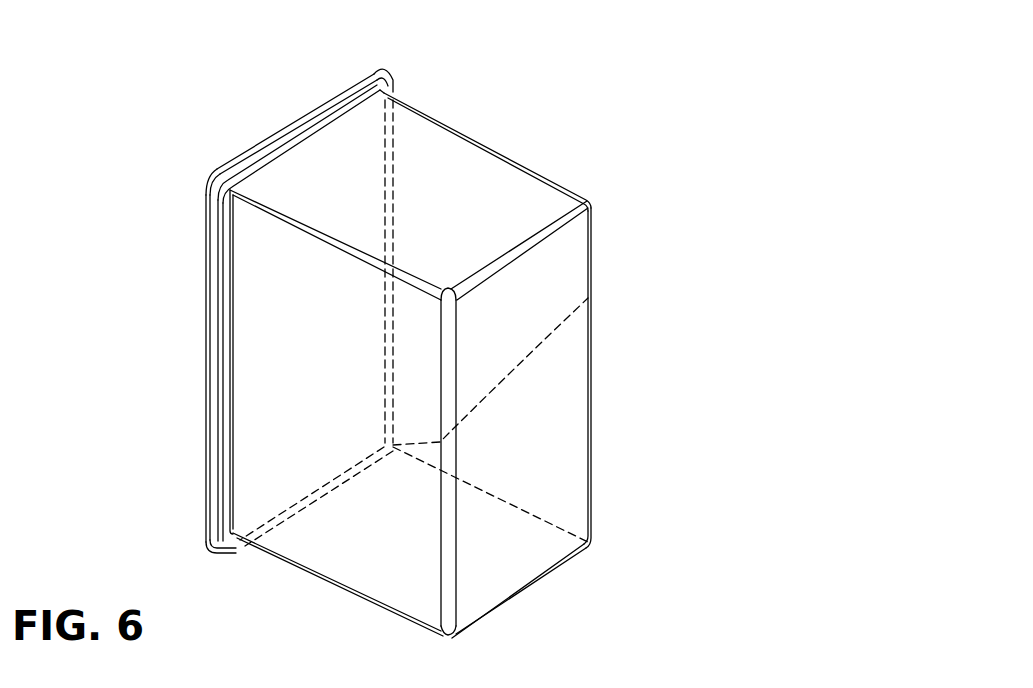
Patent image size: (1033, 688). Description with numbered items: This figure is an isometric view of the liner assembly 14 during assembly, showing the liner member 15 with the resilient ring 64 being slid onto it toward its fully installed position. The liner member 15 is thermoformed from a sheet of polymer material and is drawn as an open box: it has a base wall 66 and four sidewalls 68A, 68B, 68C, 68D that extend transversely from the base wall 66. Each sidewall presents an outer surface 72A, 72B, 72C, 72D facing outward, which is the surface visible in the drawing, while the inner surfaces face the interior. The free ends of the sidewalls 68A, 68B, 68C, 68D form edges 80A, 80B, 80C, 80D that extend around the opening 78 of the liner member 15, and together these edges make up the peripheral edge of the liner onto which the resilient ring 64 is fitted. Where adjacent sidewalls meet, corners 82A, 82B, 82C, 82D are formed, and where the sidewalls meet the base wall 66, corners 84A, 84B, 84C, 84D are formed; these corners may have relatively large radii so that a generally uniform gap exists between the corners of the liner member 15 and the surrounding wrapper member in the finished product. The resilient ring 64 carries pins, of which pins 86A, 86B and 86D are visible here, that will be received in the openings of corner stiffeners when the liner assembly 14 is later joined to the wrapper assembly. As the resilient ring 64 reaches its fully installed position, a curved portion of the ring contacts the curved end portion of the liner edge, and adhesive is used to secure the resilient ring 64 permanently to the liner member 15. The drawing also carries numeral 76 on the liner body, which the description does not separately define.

The liner assembly 14 is at (490, 106).
The liner member 15 is at (553, 207).
The resilient ring 64 is at (404, 71).
The base wall 66 is at (568, 422).
The sidewall 68A is at (549, 171).
The sidewall 68B is at (328, 518).
The sidewall 68C is at (497, 618).
The sidewall 68D is at (596, 352).
The outer surface 72A is at (540, 247).
The outer surface 72B is at (370, 518).
The outer surface 72C is at (531, 587).
The outer surface 72D is at (598, 398).
The rear wall 76 is at (563, 463).
The opening 78 is at (206, 345).
The edge 80A is at (277, 147).
The edge 80B is at (223, 488).
The edge 80C is at (258, 553).
The edge 80D is at (400, 94).
The corner 82A is at (500, 193).
The corner 82B is at (228, 184).
The corner 82C is at (370, 3).
The corner 82D is at (542, 512).
The corner 84A is at (545, 230).
The corner 84B is at (443, 550).
The corner 84C is at (557, 571).
The corner 84D is at (594, 486).
The pin 86A is at (400, 90).
The pin 86B is at (213, 188).
The pin 86D is at (592, 300).